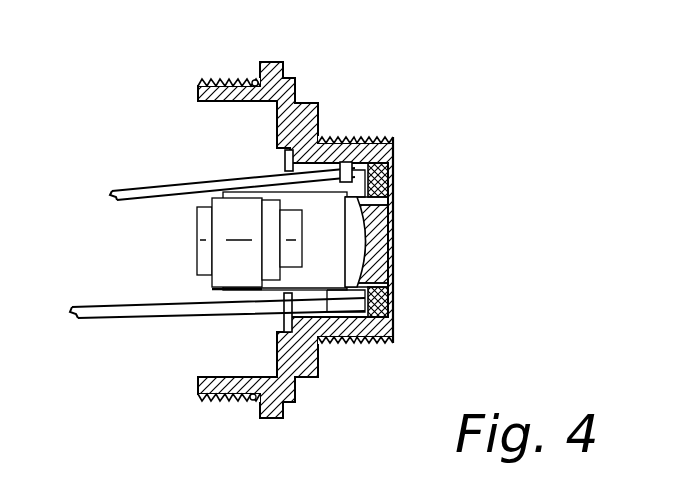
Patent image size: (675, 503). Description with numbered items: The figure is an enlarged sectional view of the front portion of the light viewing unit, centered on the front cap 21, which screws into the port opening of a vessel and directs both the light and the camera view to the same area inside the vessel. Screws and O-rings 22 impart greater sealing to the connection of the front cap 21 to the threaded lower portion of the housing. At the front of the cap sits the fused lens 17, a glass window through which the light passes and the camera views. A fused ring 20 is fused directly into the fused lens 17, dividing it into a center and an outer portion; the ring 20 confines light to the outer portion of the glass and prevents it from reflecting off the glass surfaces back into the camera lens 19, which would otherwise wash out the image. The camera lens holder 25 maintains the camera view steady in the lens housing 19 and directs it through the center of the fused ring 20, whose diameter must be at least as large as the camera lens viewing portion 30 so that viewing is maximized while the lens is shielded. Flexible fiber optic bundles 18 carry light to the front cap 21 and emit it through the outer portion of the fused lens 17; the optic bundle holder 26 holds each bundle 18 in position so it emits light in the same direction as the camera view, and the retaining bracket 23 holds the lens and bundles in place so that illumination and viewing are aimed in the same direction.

The fused lens 17 is at (368, 258).
The fiber optic bundles 18 is at (130, 190).
The camera lens 19 is at (386, 235).
The fused ring 20 is at (393, 180).
The front cap 21 is at (308, 110).
The O-rings 22 is at (255, 80).
The retaining bracket 23 is at (283, 162).
The camera lens holder 25 is at (284, 300).
The optic bundle holder 26 is at (386, 157).
The camera lens viewing portion 30 is at (303, 222).